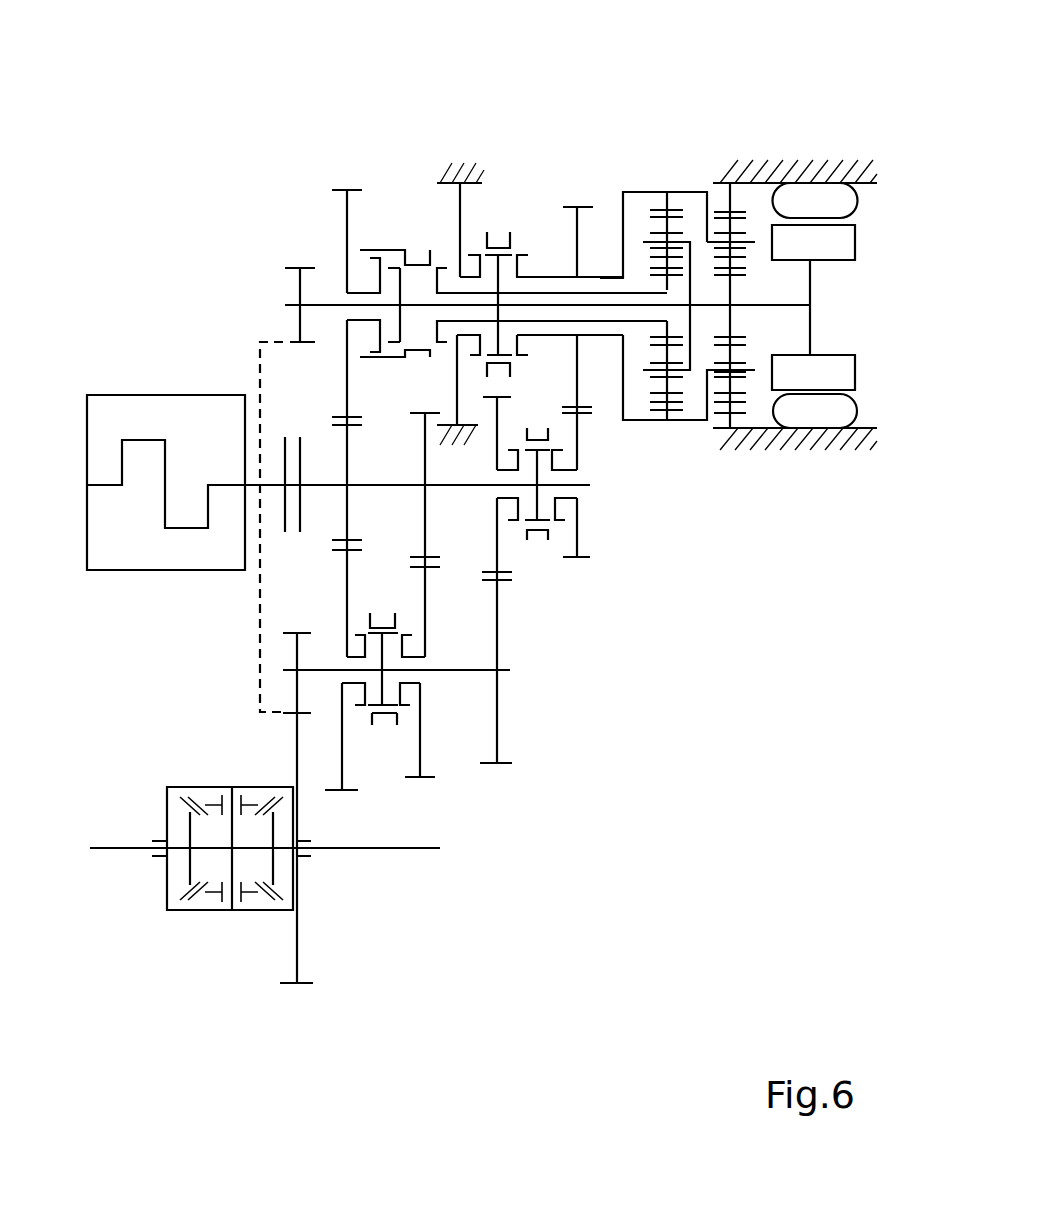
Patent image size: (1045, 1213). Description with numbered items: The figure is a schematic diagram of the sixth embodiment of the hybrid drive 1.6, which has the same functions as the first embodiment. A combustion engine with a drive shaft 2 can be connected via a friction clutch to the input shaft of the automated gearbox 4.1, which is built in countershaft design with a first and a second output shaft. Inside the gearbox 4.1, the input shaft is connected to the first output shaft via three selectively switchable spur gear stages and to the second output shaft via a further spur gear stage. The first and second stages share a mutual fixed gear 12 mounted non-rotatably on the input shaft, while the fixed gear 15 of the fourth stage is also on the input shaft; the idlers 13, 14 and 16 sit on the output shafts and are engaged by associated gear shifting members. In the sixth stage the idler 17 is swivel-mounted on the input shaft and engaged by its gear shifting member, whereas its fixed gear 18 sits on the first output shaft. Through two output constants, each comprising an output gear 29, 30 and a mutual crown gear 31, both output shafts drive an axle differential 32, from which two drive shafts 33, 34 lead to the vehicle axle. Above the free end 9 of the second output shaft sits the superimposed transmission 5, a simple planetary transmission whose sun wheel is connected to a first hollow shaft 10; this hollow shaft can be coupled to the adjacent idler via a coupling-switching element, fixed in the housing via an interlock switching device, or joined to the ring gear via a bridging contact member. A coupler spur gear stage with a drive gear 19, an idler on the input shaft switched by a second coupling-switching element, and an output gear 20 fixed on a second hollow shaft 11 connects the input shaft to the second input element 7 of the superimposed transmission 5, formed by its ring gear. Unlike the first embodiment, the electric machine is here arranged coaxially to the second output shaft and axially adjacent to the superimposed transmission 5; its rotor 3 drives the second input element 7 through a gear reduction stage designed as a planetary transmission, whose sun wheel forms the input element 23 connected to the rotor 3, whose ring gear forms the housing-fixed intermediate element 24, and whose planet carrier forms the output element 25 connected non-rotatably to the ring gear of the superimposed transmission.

The hybrid drive 1.6 is at (187, 108).
The drive shaft 2 is at (227, 485).
The rotor 3 is at (825, 243).
The automated gearbox 4.1 is at (660, 748).
The superimposed transmission 5 is at (677, 310).
The second input element 7 is at (663, 410).
The free end 9 is at (672, 303).
The first hollow shaft 10 is at (613, 292).
The second hollow shaft 11 is at (550, 282).
The fixed gear 12 is at (347, 500).
The idler 13 is at (342, 750).
The idler 14 is at (350, 222).
The fixed gear 15 is at (425, 500).
The idler 16 is at (425, 742).
The idler 17 is at (498, 552).
The fixed gear 18 is at (497, 712).
The drive gear 19 is at (578, 530).
The output gear 20 is at (577, 242).
The input element 23 is at (730, 325).
The intermediate element 24 is at (732, 415).
The output element 25 is at (700, 393).
The output gear 29 is at (292, 651).
The output gear 30 is at (296, 293).
The crown gear 31 is at (293, 740).
The axle differential 32 is at (208, 835).
The drive shaft 33 is at (122, 852).
The drive shaft 34 is at (375, 850).